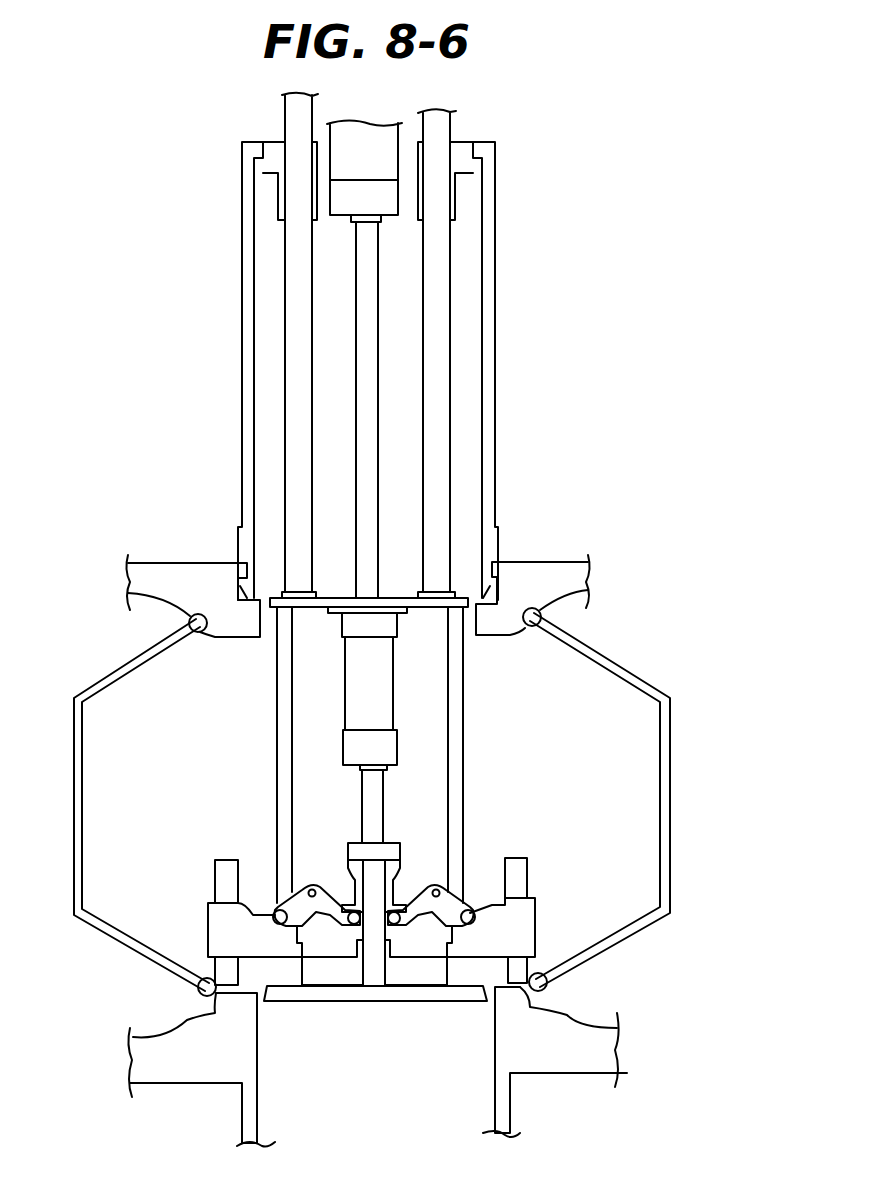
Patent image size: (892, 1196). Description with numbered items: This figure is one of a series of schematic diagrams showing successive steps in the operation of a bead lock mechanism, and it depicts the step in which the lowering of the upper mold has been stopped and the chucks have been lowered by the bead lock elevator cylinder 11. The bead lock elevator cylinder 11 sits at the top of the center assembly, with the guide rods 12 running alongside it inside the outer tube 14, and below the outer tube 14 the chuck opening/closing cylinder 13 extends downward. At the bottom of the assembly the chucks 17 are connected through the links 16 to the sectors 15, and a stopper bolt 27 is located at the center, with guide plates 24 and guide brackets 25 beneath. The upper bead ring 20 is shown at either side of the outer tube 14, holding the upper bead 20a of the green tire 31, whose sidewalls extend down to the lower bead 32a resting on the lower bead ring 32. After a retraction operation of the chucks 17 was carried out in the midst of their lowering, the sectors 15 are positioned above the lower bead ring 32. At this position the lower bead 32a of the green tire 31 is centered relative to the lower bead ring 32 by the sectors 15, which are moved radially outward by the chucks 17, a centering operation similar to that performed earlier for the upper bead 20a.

The bead lock elevator cylinder 11 is at (380, 165).
The guide rods 12 is at (435, 370).
The chuck opening/closing cylinder 13 is at (382, 712).
The outer tube 14 is at (488, 460).
The sectors 15 is at (520, 870).
The links 16 is at (447, 890).
The chucks 17 is at (528, 925).
The upper bead ring 20 is at (537, 572).
The upper bead 20a is at (189, 620).
The guide plates 24 is at (323, 1000).
The guide brackets 25 is at (430, 993).
The stopper bolt 27 is at (375, 1002).
The green tire 31 is at (668, 765).
The lower bead ring 32 is at (532, 1023).
The lower bead 32a is at (197, 991).